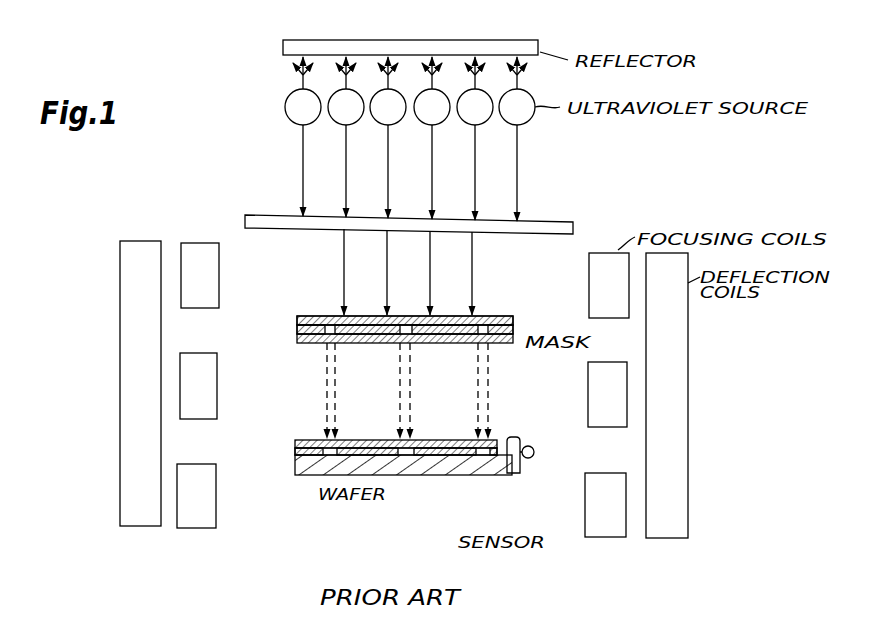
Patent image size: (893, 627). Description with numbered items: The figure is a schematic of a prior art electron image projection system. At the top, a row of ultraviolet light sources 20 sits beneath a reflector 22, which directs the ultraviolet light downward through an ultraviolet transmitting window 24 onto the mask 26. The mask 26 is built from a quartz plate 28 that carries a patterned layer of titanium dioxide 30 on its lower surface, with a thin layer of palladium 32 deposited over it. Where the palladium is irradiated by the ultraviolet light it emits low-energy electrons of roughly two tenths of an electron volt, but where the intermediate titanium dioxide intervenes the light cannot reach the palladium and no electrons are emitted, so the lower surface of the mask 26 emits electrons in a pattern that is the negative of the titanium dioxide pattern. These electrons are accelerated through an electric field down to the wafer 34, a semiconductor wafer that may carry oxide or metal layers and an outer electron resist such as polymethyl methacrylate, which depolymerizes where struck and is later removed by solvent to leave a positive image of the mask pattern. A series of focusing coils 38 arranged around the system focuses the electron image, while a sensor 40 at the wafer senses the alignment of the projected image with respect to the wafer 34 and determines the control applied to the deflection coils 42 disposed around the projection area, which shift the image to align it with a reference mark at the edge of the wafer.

The ultraviolet light sources 20 is at (358, 93).
The reflector 22 is at (536, 40).
The ultraviolet transmitting window 24 is at (558, 222).
The mask 26 is at (420, 317).
The quartz plate 28 is at (452, 316).
The patterned layer of titanium dioxide 30 is at (513, 330).
The thin layer of palladium 32 is at (300, 343).
The wafer 34 is at (297, 475).
The focusing coils 38 is at (195, 243).
The sensor 40 is at (525, 475).
The deflection coils 42 is at (120, 327).